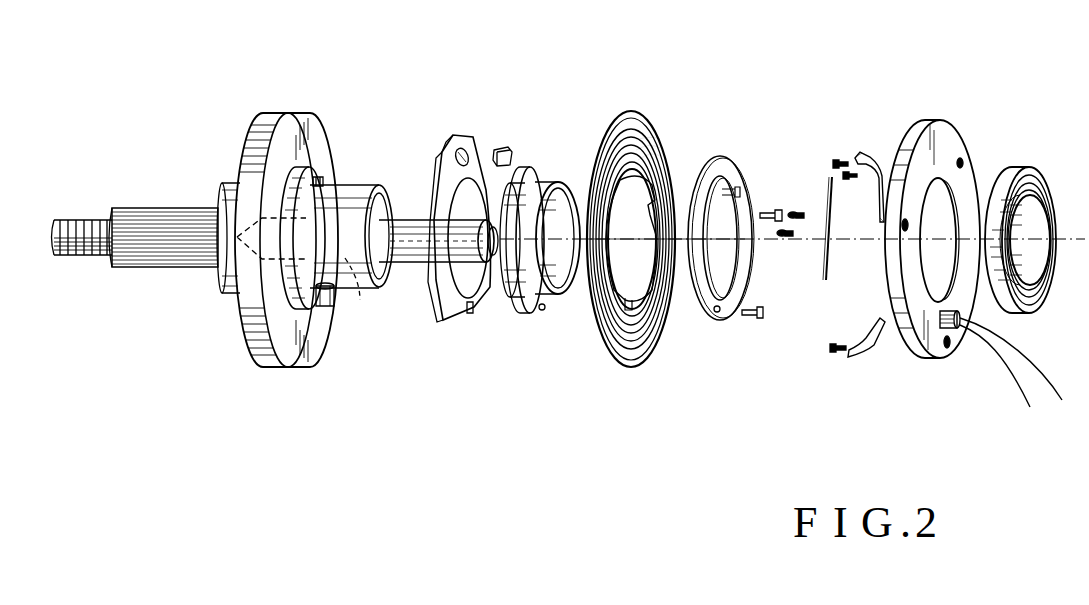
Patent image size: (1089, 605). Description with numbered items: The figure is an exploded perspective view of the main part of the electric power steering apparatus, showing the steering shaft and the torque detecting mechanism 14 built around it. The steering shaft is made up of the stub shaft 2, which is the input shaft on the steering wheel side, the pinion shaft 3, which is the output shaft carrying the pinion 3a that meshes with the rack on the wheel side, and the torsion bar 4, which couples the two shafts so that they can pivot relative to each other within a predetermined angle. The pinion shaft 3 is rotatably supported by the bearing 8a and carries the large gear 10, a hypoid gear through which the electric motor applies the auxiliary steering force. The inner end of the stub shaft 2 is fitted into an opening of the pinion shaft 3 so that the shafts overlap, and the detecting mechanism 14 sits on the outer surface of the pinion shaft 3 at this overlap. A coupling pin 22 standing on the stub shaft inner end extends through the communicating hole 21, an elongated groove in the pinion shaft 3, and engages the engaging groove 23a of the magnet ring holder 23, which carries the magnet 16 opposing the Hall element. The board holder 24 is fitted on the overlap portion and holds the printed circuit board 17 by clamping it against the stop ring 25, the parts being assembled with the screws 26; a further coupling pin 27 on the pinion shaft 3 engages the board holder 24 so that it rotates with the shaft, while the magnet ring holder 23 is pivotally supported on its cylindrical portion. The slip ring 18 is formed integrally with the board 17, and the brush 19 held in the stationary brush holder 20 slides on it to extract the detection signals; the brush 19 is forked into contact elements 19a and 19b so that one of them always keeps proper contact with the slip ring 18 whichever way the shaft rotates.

The stub shaft 2 is at (400, 262).
The pinion shaft 3 is at (125, 268).
The pinion 3a is at (173, 220).
The torsion bar 4 is at (345, 258).
The bearing 8a is at (1032, 172).
The large gear 10 is at (275, 355).
The detecting mechanism 14 is at (590, 100).
The magnet 16 is at (502, 147).
The printed circuit board 17 is at (637, 118).
The slip ring 18 is at (640, 163).
The brush 19 is at (873, 158).
The contact element 19a is at (858, 152).
The contact element 19b is at (878, 218).
The brush holder 20 is at (945, 140).
The communicating hole 21 is at (310, 308).
The coupling pin 22 is at (327, 306).
The magnet ring holder 23 is at (445, 312).
The engaging groove 23a is at (471, 314).
The board holder 24 is at (543, 165).
The stop ring 25 is at (720, 160).
The screws 26 is at (735, 187).
The coupling pin 27 is at (323, 178).